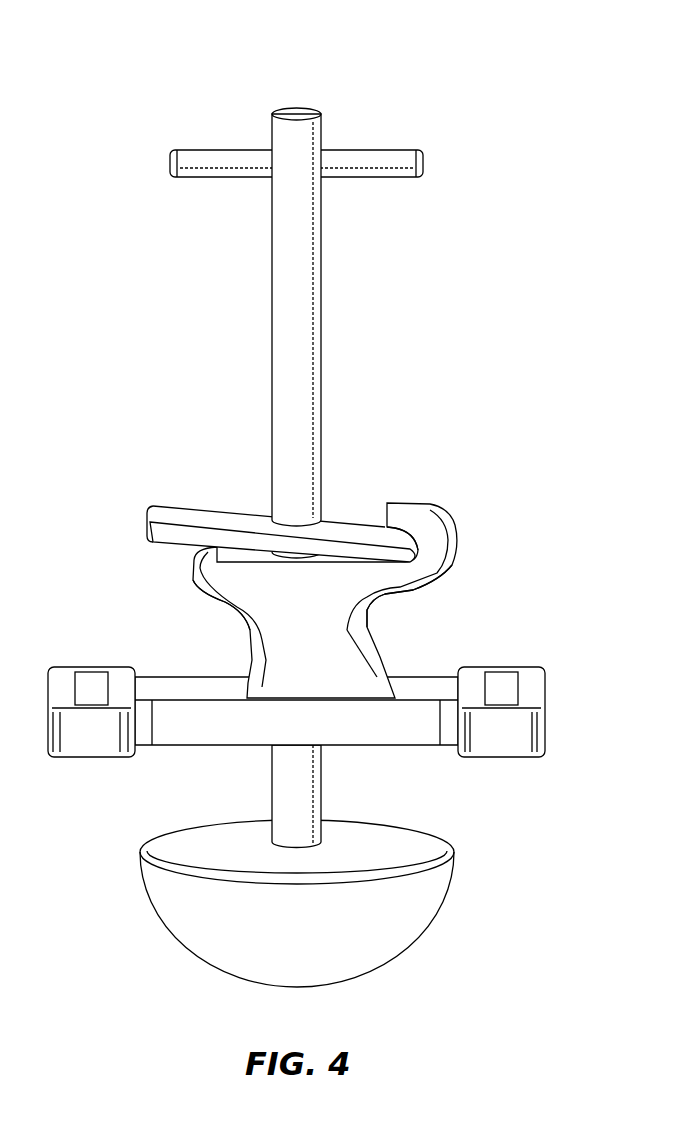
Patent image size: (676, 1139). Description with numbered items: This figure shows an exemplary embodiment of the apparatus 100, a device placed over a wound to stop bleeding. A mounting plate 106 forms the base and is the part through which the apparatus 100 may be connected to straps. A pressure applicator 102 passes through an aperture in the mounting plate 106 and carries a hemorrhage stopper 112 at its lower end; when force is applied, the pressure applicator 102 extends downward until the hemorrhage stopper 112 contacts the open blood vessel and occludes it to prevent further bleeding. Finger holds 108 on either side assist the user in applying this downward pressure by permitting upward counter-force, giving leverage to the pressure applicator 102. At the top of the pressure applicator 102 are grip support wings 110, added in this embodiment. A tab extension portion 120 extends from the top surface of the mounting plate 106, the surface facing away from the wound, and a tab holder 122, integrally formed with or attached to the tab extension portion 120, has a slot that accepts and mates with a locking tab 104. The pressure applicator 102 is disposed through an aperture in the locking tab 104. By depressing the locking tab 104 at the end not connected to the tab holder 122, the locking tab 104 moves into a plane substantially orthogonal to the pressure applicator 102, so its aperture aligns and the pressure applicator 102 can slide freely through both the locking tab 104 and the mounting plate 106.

The apparatus 100 is at (486, 63).
The pressure applicator 102 is at (321, 280).
The locking tab 104 is at (291, 335).
The mounting plate 106 is at (413, 730).
The finger hold 108 is at (242, 618).
The grip support wings 110 is at (193, 150).
The hemorrhage stopper 112 is at (403, 910).
The tab extension portion 120 is at (347, 556).
The tab holder 122 is at (413, 503).